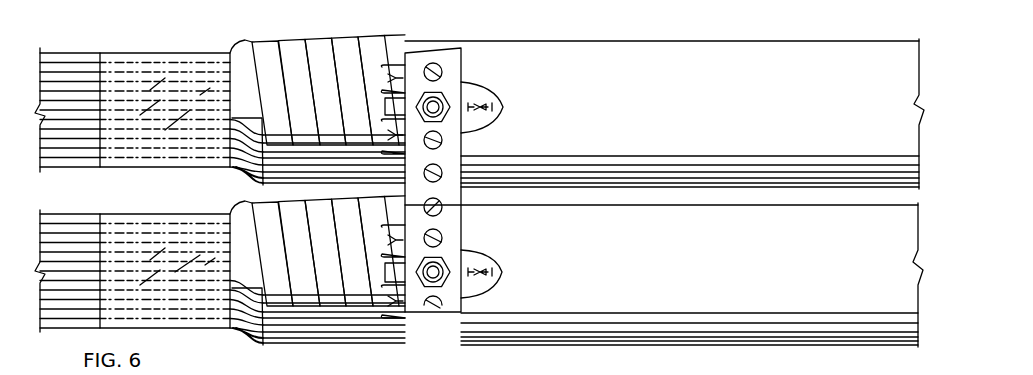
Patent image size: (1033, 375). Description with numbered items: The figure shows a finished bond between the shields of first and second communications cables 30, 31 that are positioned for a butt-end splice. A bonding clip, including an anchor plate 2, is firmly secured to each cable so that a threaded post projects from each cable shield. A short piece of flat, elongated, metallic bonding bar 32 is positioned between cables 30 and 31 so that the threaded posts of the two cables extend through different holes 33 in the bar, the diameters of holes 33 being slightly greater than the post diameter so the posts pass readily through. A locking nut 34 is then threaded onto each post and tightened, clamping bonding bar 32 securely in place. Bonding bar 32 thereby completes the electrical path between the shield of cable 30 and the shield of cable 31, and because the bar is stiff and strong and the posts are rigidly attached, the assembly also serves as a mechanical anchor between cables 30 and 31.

The anchor plate 2 is at (504, 108).
The first communications cable 30 is at (746, 52).
The second communications cable 31 is at (857, 320).
The bonding bar 32 is at (445, 60).
The holes 33 is at (438, 205).
The locking nut 34 is at (441, 104).